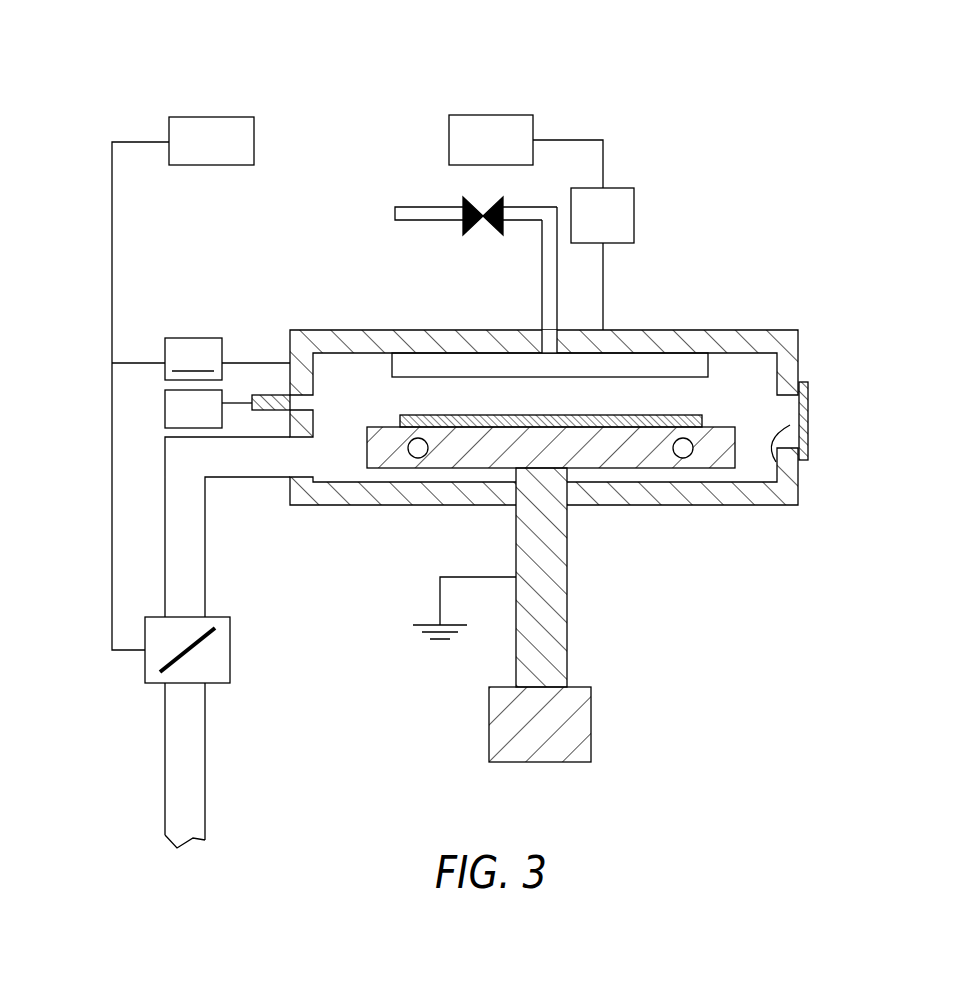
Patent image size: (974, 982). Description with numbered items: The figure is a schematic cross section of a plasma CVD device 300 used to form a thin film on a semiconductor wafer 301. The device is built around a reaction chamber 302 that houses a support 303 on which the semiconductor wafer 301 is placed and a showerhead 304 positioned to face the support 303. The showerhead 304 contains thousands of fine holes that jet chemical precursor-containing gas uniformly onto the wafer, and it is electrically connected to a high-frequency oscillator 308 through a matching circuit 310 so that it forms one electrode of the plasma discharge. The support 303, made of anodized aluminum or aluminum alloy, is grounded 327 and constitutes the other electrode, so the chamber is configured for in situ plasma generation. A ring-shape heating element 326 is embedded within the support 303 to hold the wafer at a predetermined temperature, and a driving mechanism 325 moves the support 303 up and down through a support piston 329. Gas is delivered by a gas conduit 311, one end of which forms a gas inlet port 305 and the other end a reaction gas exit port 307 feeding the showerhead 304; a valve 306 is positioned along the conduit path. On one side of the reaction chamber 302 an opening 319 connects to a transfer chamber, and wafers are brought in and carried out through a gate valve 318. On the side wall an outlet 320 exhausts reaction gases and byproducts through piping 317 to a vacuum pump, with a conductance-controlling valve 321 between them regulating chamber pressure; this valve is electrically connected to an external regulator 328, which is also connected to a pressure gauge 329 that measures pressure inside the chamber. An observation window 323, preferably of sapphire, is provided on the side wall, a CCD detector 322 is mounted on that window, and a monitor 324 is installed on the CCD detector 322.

The plasma CVD device 300 is at (622, 82).
The semiconductor wafer 301 is at (407, 413).
The reaction chamber 302 is at (323, 345).
The support 303 is at (367, 448).
The showerhead 304 is at (477, 373).
The gas inlet port 305 is at (392, 212).
The valve 306 is at (462, 200).
The reaction gas exit port 307 is at (547, 358).
The high-frequency oscillator 308 is at (512, 154).
The matching circuit 310 is at (624, 228).
The gas conduit 311 is at (542, 290).
The piping 317 is at (165, 483).
The gate valve 318 is at (808, 422).
The opening 319 is at (787, 473).
The outlet 320 is at (303, 457).
The conductance-controlling valve 321 is at (230, 648).
The CCD detector 322 is at (273, 410).
The observation window 323 is at (315, 408).
The monitor 324 is at (214, 421).
The driving mechanism 325 is at (591, 722).
The ring-shape heating element 326 is at (683, 457).
The ground 327 is at (464, 625).
The external regulator 328 is at (232, 156).
The support piston / pressure gauge 329 is at (567, 550).